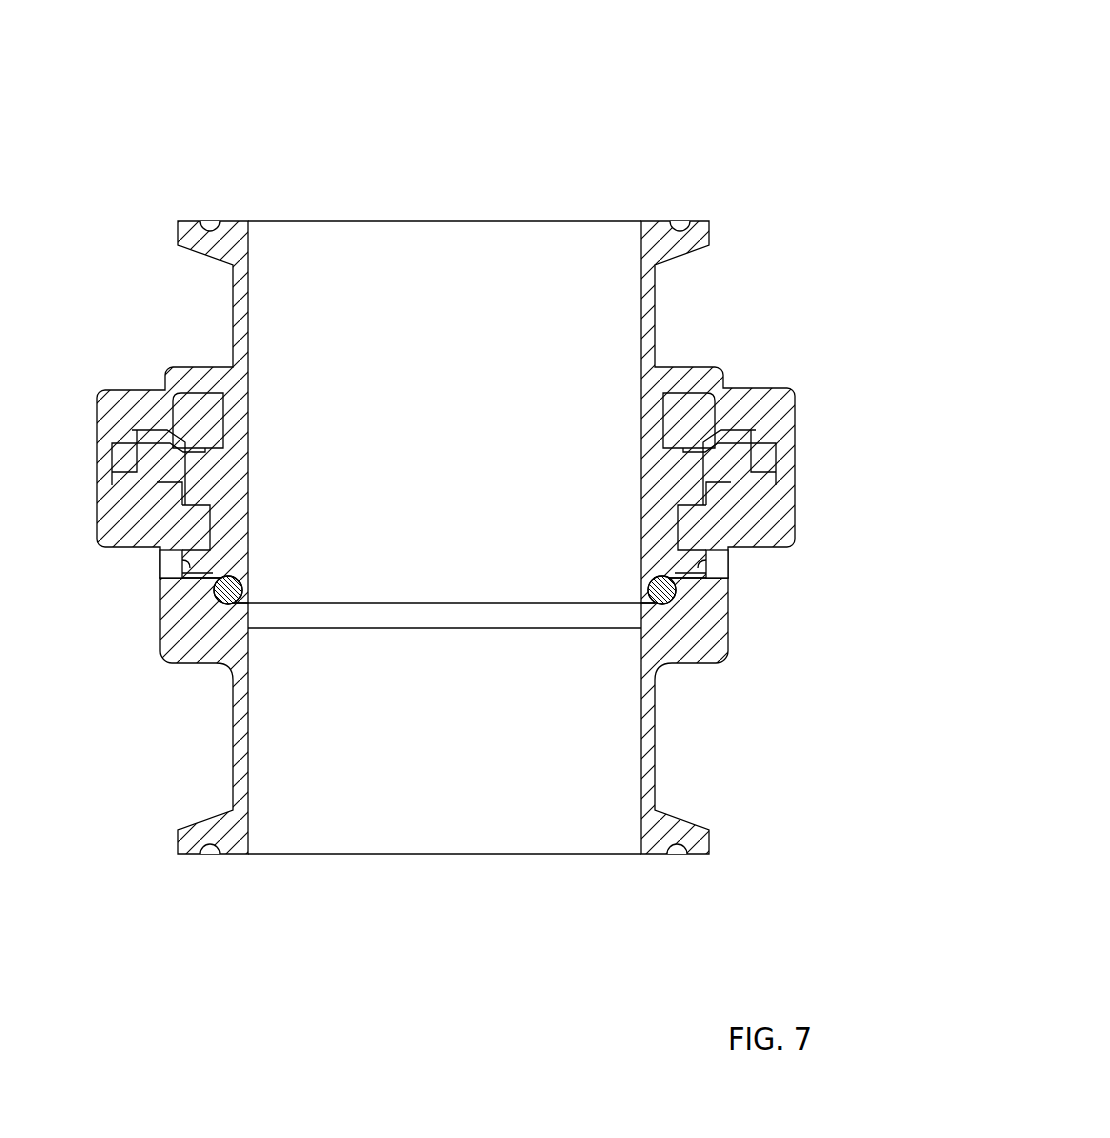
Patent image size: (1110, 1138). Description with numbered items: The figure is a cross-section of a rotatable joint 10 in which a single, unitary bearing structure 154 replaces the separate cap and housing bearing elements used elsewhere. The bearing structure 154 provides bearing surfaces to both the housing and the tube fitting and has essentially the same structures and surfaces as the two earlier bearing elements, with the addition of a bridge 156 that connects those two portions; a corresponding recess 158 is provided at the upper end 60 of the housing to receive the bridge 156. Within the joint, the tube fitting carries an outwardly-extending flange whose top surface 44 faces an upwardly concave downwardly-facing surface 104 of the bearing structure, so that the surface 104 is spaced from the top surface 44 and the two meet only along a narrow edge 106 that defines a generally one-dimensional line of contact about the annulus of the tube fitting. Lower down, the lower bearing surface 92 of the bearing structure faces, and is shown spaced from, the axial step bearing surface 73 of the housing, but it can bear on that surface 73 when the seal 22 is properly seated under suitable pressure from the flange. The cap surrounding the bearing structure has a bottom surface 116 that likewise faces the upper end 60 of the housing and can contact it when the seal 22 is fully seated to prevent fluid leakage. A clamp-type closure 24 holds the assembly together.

The rotatable joint 10 is at (722, 92).
The seal 22 is at (220, 592).
The clamp-type closure 24 is at (760, 388).
The top surface 44 is at (175, 425).
The upper end 60 is at (140, 462).
The axial step bearing surface 73 is at (705, 565).
The lower bearing surface 92 is at (683, 570).
The downwardly-facing surface 104 is at (185, 447).
The edge 106 is at (200, 445).
The bottom surface 116 is at (160, 490).
The bearing structure 154 is at (690, 405).
The bridge 156 is at (705, 478).
The recess 158 is at (175, 490).